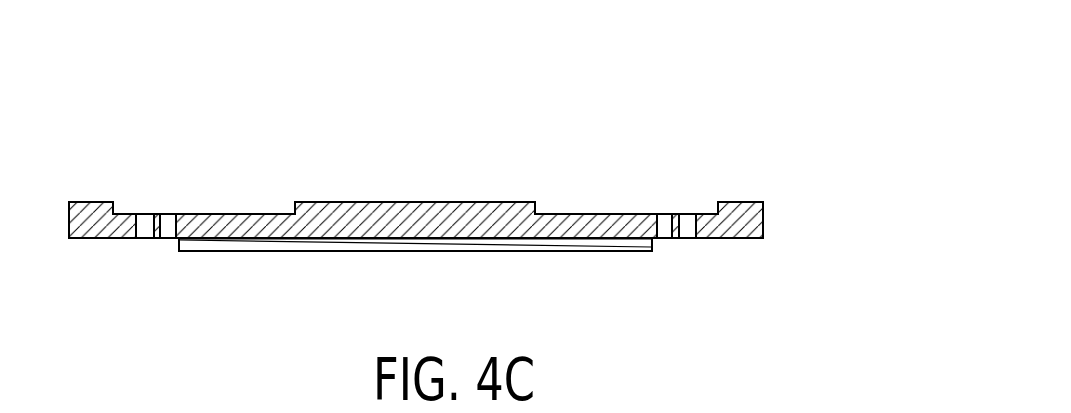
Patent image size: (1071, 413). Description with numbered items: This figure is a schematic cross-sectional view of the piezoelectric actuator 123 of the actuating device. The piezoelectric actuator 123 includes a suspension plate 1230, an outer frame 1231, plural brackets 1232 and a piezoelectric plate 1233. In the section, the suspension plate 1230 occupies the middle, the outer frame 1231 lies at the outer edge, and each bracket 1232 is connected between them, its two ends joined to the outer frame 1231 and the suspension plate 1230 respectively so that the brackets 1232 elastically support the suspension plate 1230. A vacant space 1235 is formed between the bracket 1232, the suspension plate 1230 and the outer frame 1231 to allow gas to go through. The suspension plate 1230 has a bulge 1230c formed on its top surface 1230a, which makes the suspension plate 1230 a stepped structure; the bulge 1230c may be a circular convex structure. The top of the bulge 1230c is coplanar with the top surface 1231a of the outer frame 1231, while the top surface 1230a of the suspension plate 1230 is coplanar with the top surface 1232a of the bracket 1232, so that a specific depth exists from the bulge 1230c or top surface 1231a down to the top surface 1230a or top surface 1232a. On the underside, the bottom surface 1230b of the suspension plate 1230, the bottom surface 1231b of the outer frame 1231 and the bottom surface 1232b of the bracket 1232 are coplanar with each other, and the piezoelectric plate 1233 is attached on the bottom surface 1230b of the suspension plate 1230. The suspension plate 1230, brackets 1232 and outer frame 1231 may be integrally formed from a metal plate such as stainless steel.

The piezoelectric actuator 123 is at (112, 67).
The suspension plate 1230 is at (268, 197).
The top surface of the suspension plate 1230a is at (600, 213).
The bottom surface of the suspension plate 1230b is at (177, 238).
The bulge 1230c is at (417, 202).
The outer frame 1231 is at (783, 220).
The top surface of the outer frame 1231a is at (735, 202).
The bottom surface of the outer frame 1231b is at (740, 238).
The bracket 1232 is at (680, 193).
The top surface of the bracket 1232a is at (677, 218).
The bottom surface of the bracket 1232b is at (673, 237).
The piezoelectric plate 1233 is at (475, 245).
The vacant space 1235 is at (667, 238).